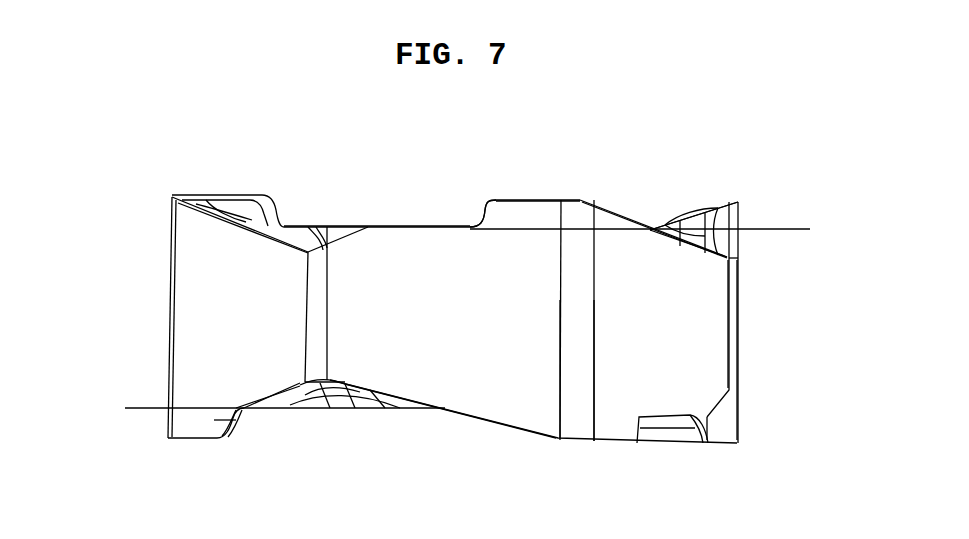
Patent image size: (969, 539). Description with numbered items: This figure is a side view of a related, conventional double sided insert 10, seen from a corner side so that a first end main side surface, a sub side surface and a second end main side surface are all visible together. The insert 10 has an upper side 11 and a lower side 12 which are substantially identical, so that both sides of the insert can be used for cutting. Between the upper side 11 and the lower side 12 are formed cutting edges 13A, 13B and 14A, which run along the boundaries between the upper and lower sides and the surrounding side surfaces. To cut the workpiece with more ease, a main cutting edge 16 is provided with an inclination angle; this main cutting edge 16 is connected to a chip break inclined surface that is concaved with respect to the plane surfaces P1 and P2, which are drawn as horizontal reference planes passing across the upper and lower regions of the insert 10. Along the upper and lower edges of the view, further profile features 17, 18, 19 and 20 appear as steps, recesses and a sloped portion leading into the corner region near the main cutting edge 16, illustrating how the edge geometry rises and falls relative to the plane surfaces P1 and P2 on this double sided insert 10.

The cutting insert 10 is at (146, 199).
The upper side 11 is at (400, 210).
The lower side 12 is at (425, 417).
The cutting edge 13A is at (665, 325).
The cutting edge 13B is at (513, 370).
The cutting edge 14A is at (253, 350).
The main cutting edge 16 is at (628, 216).
The step portion 17 is at (527, 200).
The recess portion 18 is at (332, 226).
The lower protrusion 19 is at (363, 410).
The inclined surface 20 is at (580, 201).
The plane surface P1 is at (787, 229).
The plane surface P2 is at (145, 409).